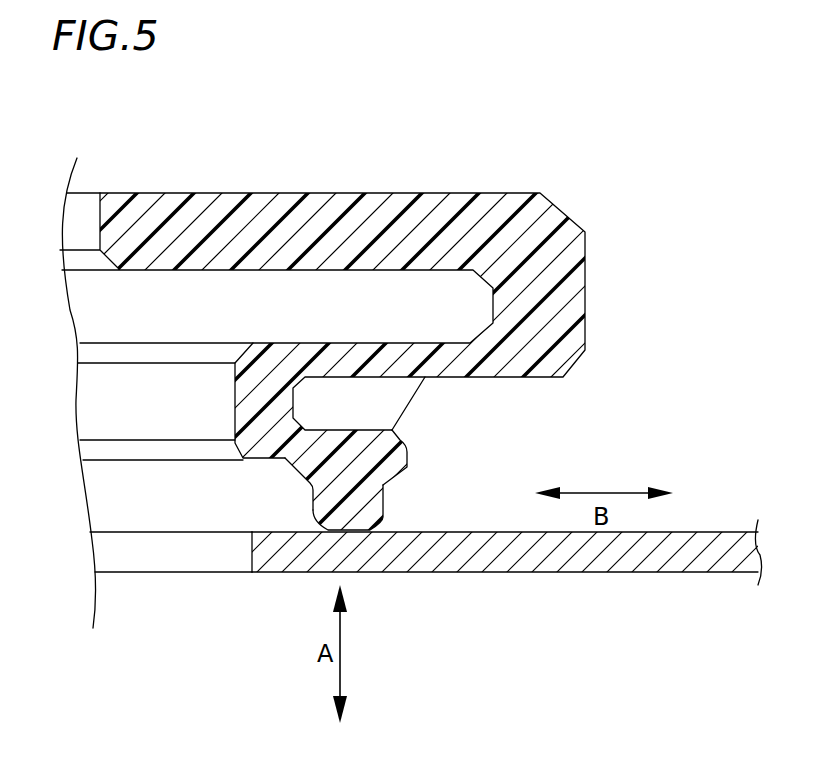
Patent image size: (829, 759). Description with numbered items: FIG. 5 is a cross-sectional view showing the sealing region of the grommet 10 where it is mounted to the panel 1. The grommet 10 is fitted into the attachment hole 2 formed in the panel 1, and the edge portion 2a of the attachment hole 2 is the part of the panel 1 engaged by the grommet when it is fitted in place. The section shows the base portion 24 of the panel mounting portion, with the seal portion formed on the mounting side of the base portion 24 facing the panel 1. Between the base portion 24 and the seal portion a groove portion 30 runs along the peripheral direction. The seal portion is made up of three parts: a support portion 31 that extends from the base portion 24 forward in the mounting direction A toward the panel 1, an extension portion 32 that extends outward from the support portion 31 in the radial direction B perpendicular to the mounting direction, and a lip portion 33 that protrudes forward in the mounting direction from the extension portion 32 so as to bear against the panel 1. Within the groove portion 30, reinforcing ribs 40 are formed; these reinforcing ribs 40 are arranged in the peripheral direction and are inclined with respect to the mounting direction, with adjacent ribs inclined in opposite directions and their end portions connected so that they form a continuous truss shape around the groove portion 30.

The panel 1 is at (697, 513).
The attachment hole 2 is at (115, 572).
The edge portion 2a is at (250, 547).
The grommet 10 is at (626, 148).
The base portion 24 is at (585, 350).
The groove portion 30 is at (219, 390).
The support portion 31 is at (247, 398).
The extension portion 32 is at (263, 460).
The lip portion 33 is at (372, 517).
The reinforcing ribs 40 is at (420, 397).